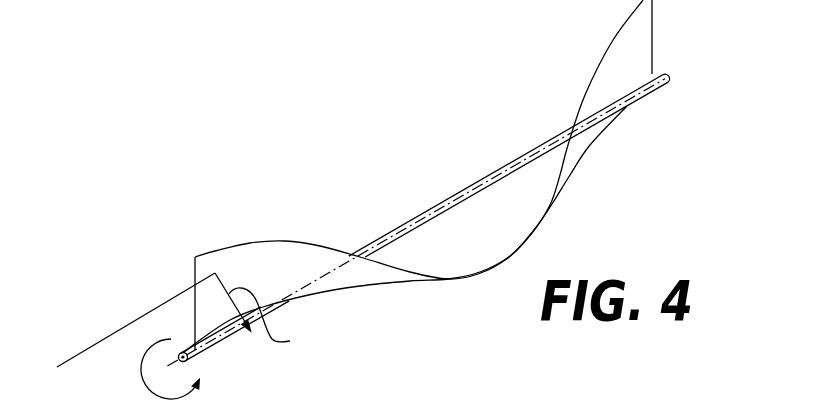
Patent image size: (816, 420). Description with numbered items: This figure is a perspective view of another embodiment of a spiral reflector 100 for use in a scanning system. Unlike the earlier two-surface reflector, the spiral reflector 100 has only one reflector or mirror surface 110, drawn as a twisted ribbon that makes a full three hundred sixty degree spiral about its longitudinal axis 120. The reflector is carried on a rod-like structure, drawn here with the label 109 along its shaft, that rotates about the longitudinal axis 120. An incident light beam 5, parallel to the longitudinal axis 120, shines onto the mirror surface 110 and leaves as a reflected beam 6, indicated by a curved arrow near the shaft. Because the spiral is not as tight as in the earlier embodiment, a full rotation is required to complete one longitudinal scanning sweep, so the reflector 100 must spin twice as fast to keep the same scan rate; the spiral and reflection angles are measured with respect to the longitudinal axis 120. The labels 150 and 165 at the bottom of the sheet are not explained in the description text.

The incident light beam 5 is at (133, 321).
The reflected beam 6 is at (260, 313).
The spiral reflector 100 is at (586, 209).
The shaft 109 is at (437, 203).
The mirror surface 110 is at (293, 260).
The longitudinal axis 120 is at (683, 67).
The base 150 is at (591, 413).
The support 165 is at (799, 409).